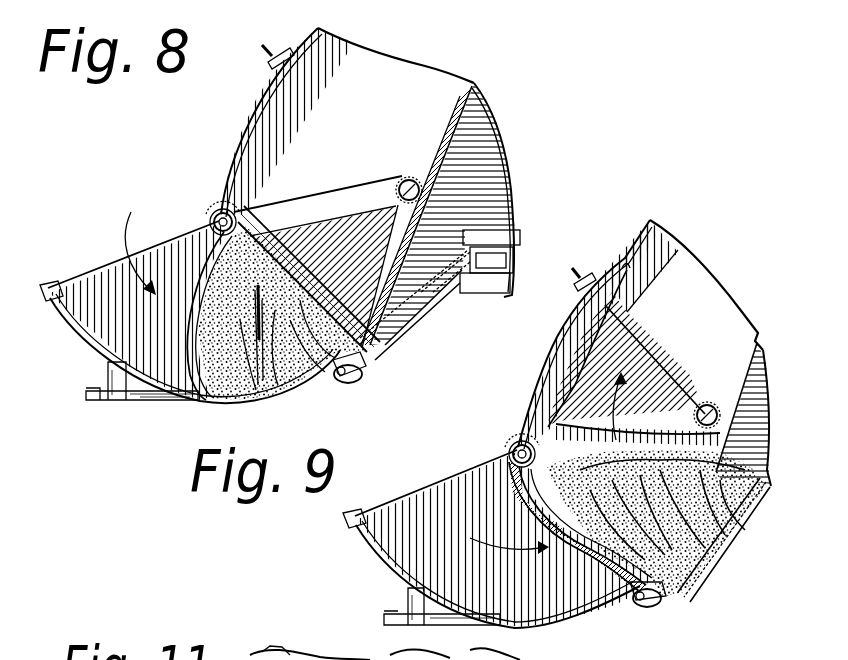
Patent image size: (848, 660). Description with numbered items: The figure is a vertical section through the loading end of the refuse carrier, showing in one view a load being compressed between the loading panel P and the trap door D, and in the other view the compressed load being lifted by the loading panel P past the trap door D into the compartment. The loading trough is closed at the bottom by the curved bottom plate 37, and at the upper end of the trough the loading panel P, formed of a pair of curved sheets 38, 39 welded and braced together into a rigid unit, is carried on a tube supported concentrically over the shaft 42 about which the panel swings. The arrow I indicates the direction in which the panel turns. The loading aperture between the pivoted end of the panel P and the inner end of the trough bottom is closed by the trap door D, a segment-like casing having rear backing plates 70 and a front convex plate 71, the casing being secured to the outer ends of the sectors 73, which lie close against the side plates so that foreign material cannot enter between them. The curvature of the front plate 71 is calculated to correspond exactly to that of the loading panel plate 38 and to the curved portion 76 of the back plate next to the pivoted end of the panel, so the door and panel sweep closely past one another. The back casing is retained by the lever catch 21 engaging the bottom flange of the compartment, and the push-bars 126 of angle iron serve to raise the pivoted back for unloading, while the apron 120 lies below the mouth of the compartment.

In FIG. 8, the curved portion of the back plate 76 is at (243, 140).
In FIG. 9, the curved portion of the back plate 76 is at (538, 389).
In FIG. 8, the shaft 42 is at (224, 204).
In FIG. 9, the shaft 42 is at (503, 441).
In FIG. 8, the bucket top edge / lip I is at (184, 217).
In FIG. 9, the bucket top edge / lip I is at (430, 471).
In FIG. 8, the trap door D is at (288, 217).
In FIG. 9, the trap door D is at (560, 360).
In FIG. 8, the sectors 73 is at (371, 195).
In FIG. 9, the sectors 73 is at (678, 378).
In FIG. 8, the push-bars 126 is at (520, 238).
In FIG. 8, the rear backing plates 70 is at (330, 281).
In FIG. 9, the rear backing plates 70 is at (620, 327).
In FIG. 8, the loading panel P is at (188, 270).
In FIG. 9, the loading panel P is at (520, 508).
In FIG. 8, the curved bottom plate 37 is at (201, 402).
In FIG. 9, the curved bottom plate 37 is at (588, 612).
In FIG. 8, the lever catch 21 is at (346, 386).
In FIG. 9, the lever catch 21 is at (651, 612).
In FIG. 9, the front convex plate 71 is at (558, 331).
In FIG. 9, the curved sheet 39 is at (536, 527).
In FIG. 9, the curved sheet 38 is at (580, 557).
In FIG. 9, the apron 120 is at (720, 562).